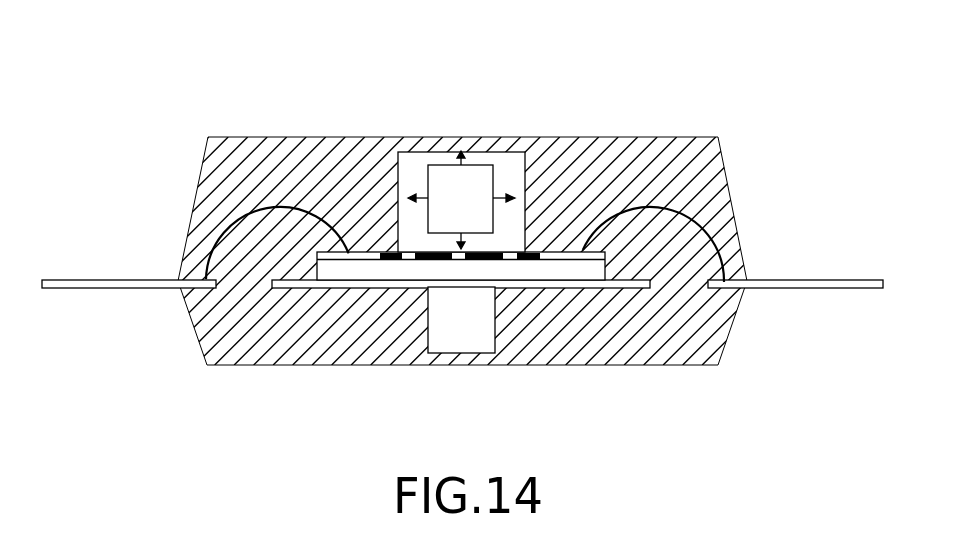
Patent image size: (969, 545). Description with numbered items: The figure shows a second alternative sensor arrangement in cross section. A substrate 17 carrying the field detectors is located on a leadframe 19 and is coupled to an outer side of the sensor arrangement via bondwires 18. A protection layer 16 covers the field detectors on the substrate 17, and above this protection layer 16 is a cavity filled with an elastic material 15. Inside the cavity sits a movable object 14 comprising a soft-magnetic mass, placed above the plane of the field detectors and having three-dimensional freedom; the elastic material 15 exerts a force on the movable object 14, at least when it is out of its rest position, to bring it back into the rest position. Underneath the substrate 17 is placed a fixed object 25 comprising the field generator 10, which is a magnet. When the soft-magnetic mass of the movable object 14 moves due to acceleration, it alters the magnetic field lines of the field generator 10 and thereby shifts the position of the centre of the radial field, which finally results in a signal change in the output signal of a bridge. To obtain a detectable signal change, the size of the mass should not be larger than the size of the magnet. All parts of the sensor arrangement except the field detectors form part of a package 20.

The field generator 10 is at (433, 357).
The fixed object 25 is at (442, 328).
The movable object 14 is at (477, 192).
The elastic material 15 is at (420, 178).
The protection layer 16 is at (562, 253).
The substrate 17 is at (572, 322).
The bondwires 18 is at (718, 257).
The leadframe 19 is at (143, 288).
The package 20 is at (205, 223).